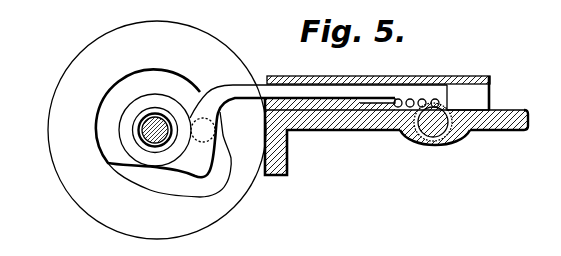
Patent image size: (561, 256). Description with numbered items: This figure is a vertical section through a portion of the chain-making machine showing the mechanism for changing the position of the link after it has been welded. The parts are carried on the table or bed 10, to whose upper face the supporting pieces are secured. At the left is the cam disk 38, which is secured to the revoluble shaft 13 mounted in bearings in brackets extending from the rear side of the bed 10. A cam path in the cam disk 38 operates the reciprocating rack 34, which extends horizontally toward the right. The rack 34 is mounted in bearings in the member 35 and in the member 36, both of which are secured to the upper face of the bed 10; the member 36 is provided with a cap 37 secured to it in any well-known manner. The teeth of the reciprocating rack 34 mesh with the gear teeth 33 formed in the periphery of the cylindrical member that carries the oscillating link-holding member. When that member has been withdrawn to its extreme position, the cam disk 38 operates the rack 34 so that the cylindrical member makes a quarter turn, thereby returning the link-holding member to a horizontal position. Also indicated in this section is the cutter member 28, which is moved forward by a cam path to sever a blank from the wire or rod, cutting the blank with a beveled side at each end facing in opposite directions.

The table or bed 10 is at (367, 125).
The revoluble shaft 13 is at (150, 138).
The cutter member 28 is at (468, 132).
The gear teeth 33 is at (440, 145).
The reciprocating rack 34 is at (347, 93).
The member 35 is at (464, 77).
The member 36 is at (307, 105).
The cap 37 is at (295, 70).
The cam disk 38 is at (203, 48).